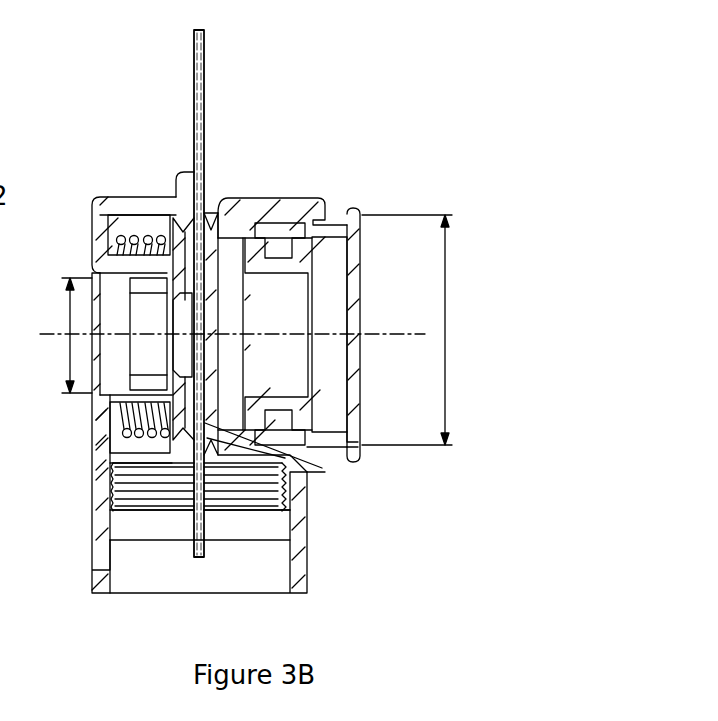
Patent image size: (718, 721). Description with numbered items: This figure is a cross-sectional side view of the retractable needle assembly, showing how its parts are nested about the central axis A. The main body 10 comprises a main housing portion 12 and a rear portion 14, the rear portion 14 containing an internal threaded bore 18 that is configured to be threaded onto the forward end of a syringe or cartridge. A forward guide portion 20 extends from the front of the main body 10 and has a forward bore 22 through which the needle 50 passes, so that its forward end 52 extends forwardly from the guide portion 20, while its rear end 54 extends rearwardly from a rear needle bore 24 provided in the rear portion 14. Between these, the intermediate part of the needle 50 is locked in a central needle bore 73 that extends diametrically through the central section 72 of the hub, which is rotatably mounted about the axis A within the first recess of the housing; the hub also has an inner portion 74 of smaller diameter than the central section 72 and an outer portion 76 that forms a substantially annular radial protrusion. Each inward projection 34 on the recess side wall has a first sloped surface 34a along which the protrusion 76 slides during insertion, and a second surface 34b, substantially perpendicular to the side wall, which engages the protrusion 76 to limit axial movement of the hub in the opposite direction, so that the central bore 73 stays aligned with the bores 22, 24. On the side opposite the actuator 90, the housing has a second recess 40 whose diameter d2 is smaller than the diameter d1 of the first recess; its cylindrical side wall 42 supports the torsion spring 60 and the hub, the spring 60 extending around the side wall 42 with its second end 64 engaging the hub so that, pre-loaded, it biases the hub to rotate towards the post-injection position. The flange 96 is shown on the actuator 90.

The main body 10 is at (94, 477).
The main housing portion 12 is at (100, 248).
The rear portion 14 is at (132, 565).
The internal threaded bore 18 is at (230, 512).
The forward guide portion 20 is at (186, 172).
The forward bore 22 is at (219, 214).
The rear needle bore 24 is at (110, 510).
The inward projection 34 is at (265, 215).
The first sloped surface 34a is at (280, 213).
The second surface 34b is at (222, 215).
The second recess 40 is at (130, 367).
The side wall 42 is at (110, 273).
The needle 50 is at (196, 91).
The forward end 52 is at (205, 42).
The rear end 54 is at (188, 522).
The torsion spring 60 is at (118, 217).
The second end 64 is at (170, 220).
The central section 72 is at (303, 483).
The central needle bore 73 is at (313, 473).
The inner portion 74 is at (112, 401).
The outer portion 76 is at (302, 452).
The actuator 90 is at (363, 372).
The ring flange 96 is at (362, 424).
The central axis A is at (406, 334).
The diameter of the first recess d1 is at (423, 330).
The diameter of the second recess d2 is at (64, 335).